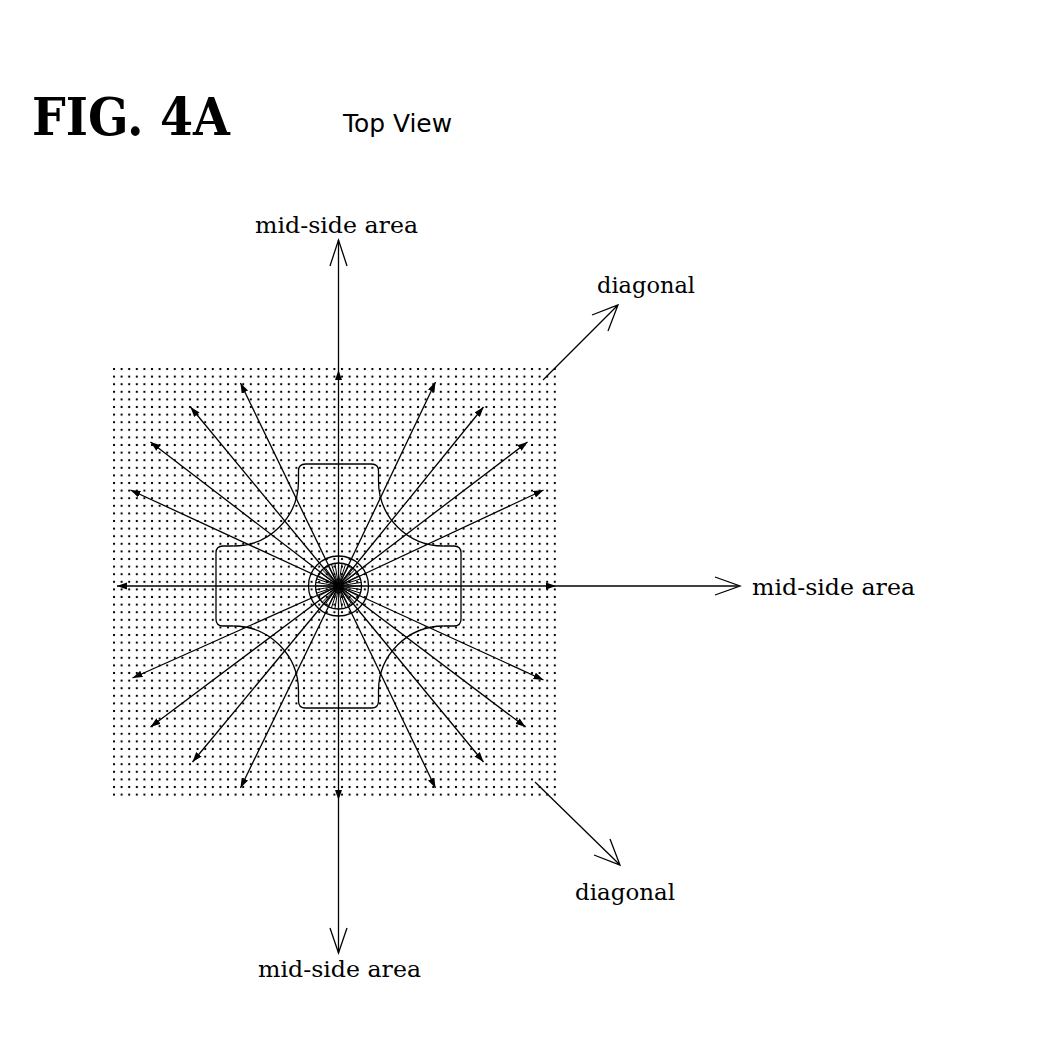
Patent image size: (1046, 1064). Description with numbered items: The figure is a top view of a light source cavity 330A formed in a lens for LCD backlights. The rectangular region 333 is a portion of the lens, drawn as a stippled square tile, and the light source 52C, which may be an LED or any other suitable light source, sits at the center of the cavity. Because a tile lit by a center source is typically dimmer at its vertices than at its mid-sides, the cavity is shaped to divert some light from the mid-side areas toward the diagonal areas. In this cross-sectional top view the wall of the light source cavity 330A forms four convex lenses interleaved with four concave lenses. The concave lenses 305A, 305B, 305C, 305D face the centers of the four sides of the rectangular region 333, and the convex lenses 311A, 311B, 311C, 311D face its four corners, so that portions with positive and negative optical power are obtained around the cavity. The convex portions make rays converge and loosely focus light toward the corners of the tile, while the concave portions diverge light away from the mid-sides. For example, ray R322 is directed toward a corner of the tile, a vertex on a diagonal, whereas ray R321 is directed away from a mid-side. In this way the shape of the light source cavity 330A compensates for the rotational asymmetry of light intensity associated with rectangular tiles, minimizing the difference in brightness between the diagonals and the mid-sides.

The concave lens 305A is at (465, 612).
The concave lens 305B is at (217, 567).
The concave lens 305C is at (362, 709).
The concave lens 305D is at (318, 458).
The convex lens 311A is at (390, 665).
The convex lens 311B is at (402, 523).
The convex lens 311C is at (272, 651).
The convex lens 311D is at (278, 526).
The light source cavity 330A is at (418, 571).
The rectangular region 333 is at (557, 777).
The light source 52C is at (338, 586).
The ray R321 is at (437, 395).
The ray R322 is at (513, 459).